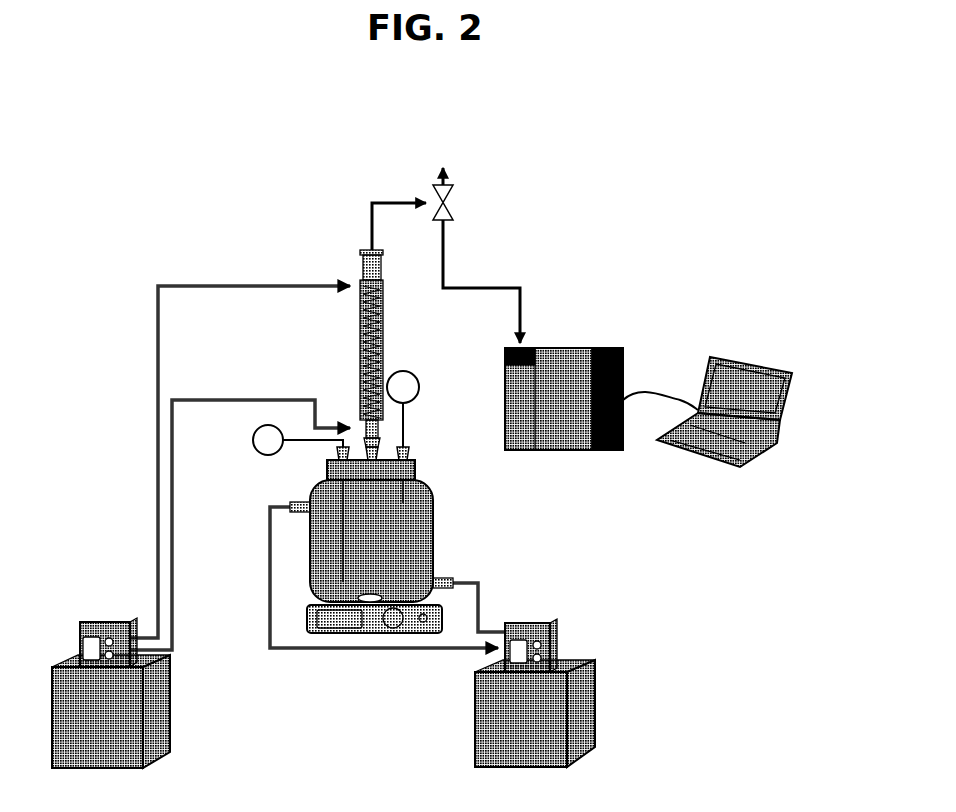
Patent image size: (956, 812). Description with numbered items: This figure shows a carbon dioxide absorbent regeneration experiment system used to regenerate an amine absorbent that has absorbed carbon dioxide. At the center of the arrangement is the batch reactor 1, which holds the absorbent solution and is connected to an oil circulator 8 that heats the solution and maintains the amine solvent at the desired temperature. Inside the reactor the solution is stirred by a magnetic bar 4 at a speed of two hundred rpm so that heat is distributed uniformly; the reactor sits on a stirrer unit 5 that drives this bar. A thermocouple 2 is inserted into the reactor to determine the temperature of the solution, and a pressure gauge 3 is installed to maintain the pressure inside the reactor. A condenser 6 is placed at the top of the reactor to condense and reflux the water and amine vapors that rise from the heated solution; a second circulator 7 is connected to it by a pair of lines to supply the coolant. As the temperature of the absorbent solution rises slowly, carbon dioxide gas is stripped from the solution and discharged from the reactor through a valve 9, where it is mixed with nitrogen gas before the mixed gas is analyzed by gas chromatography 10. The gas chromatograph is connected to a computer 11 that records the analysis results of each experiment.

The batch reactor 1 is at (371, 524).
The thermocouple 2 is at (288, 440).
The pressure gauge 3 is at (412, 409).
The magnetic bar 4 is at (377, 588).
The magnetic stirrer hotplate 5 is at (364, 620).
The condenser 6 is at (382, 348).
The circulation bath (condenser coolant) 7 is at (111, 693).
The oil circulator 8 is at (535, 693).
The sampling valve 9 is at (435, 186).
The gas chromatography 10 is at (564, 399).
The computer 11 is at (707, 397).